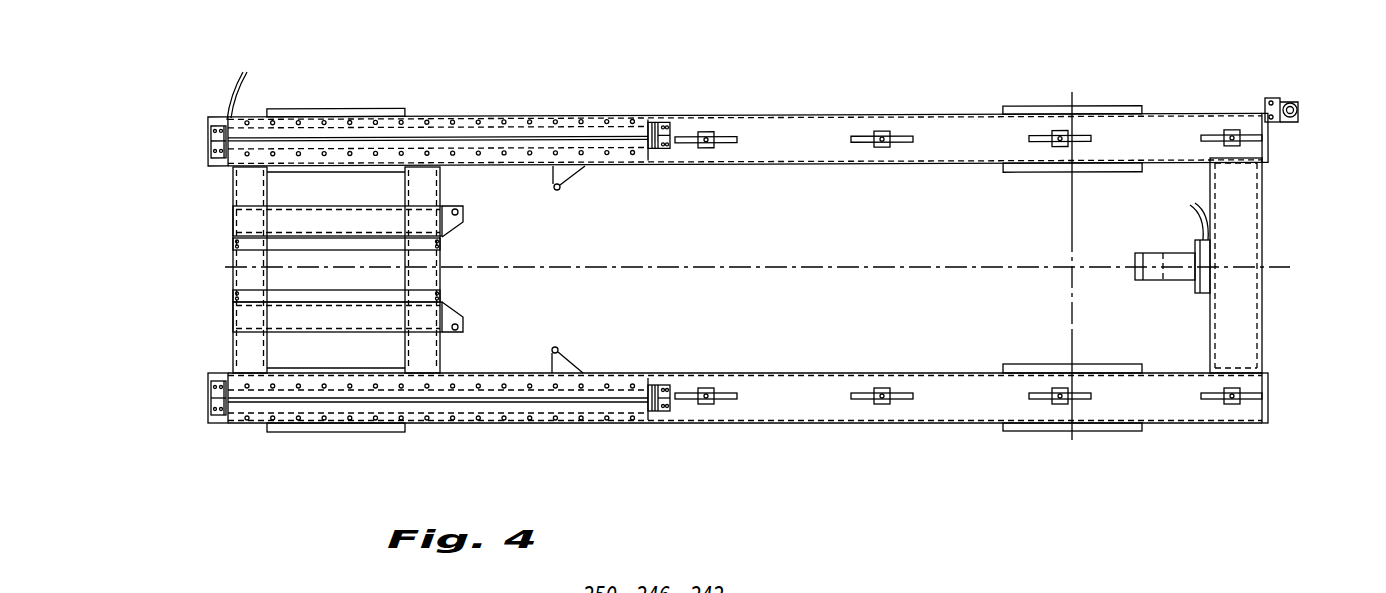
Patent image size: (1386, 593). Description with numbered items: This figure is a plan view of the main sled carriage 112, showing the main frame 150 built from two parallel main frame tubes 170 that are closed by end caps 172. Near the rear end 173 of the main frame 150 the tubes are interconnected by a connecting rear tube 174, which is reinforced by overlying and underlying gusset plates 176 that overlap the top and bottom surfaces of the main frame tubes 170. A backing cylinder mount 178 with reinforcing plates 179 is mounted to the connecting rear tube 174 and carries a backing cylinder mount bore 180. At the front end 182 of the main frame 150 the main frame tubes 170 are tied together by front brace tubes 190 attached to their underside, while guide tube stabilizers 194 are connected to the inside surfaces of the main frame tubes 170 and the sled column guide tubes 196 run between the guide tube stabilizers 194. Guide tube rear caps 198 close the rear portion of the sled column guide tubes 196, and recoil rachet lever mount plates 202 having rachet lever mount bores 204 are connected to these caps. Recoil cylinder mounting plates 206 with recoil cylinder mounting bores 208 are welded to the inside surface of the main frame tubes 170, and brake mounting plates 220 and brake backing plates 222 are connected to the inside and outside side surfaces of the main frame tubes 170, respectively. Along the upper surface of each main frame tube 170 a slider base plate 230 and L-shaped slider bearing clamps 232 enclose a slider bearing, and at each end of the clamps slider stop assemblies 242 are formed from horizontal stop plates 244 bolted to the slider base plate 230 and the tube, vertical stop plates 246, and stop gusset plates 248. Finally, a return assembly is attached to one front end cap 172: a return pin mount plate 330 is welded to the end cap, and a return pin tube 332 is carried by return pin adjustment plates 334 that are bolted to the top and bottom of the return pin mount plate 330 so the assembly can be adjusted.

The apparatus 112 is at (923, 94).
The main frame 150 is at (842, 124).
The main frame tubes 170 is at (788, 124).
The end caps 172 is at (207, 137).
The rear end 173 is at (1286, 331).
The connecting rear tube 174 is at (1245, 228).
The gusset plates 176 is at (1245, 310).
The backing cylinder mount 178 is at (1140, 253).
The reinforcing plates 179 is at (1183, 210).
The backing cylinder mount bore 180 is at (1163, 282).
The front end 182 is at (203, 354).
The front brace tubes 190 is at (246, 261).
The guide tube stabilizers 194 is at (247, 178).
The sled column guide tubes 196 is at (248, 221).
The guide tube rear caps 198 is at (757, 269).
The recoil rachet lever mount plates 202 is at (453, 222).
The rachet lever mount bores 204 is at (458, 212).
The recoil cylinder mounting plates 206 is at (578, 168).
The recoil cylinder mounting bores 208 is at (558, 190).
The brake mounting plates 220 is at (352, 108).
The brake backing plates 222 is at (332, 174).
The slider base plate 230 is at (653, 158).
The L-shaped slider bearing clamps 232 is at (542, 465).
The slider stop assemblies 242 is at (198, 106).
The horizontal stop plates 244 is at (209, 128).
The vertical stop plates 246 is at (250, 82).
The stop gusset plates 248 is at (210, 150).
The return pin mount plate 330 is at (1280, 125).
The return pin tube 332 is at (1297, 110).
The return pin adjustment plates 334 is at (1285, 103).